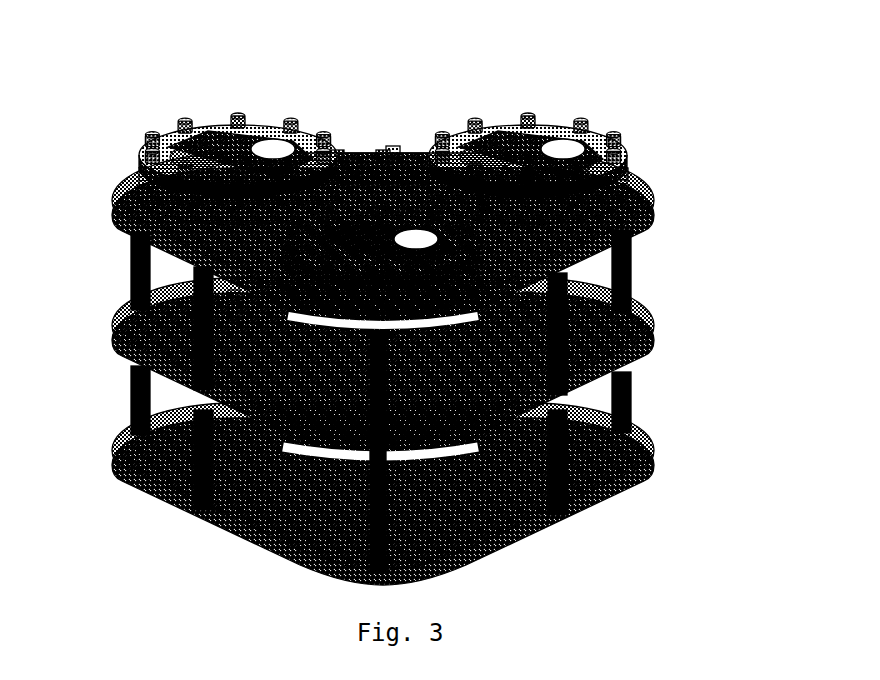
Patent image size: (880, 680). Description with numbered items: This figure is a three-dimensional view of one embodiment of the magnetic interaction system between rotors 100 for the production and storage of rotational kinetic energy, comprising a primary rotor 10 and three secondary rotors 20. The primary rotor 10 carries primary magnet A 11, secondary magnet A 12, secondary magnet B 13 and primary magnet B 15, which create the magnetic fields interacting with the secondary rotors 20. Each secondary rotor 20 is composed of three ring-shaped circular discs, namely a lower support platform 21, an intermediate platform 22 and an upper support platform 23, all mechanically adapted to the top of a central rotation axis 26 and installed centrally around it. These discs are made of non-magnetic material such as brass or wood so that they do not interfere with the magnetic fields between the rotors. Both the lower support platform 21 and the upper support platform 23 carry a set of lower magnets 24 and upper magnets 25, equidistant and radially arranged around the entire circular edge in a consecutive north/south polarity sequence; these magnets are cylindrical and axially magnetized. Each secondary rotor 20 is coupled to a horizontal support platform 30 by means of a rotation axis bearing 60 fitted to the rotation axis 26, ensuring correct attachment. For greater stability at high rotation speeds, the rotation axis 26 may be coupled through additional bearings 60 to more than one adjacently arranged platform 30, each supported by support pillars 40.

The magnetic interaction system between rotors 100 is at (397, 296).
The primary rotor 10 is at (413, 164).
The primary magnet A of the primary rotor 11 is at (337, 158).
The secondary magnet A of the primary rotor 12 is at (352, 160).
The secondary magnet B of the primary rotor 13 is at (382, 158).
The primary magnet B of the primary rotor 15 is at (392, 146).
The secondary rotor 20 is at (634, 161).
The lower support platform of the secondary rotor 21 is at (640, 230).
The intermediate platform of the secondary rotor 22 is at (582, 204).
The upper support platform of the secondary rotor 23 is at (628, 178).
The lower magnet of the secondary rotor 24 is at (476, 183).
The upper magnet of the secondary rotor 25 is at (484, 207).
The rotation axis of the secondary rotor 26 is at (195, 280).
The horizontal support platform of the rotor structure 30 is at (650, 467).
The support pillar of the horizontal platforms 40 is at (131, 431).
The rotation axis bearing of the secondary rotor 60 is at (130, 307).